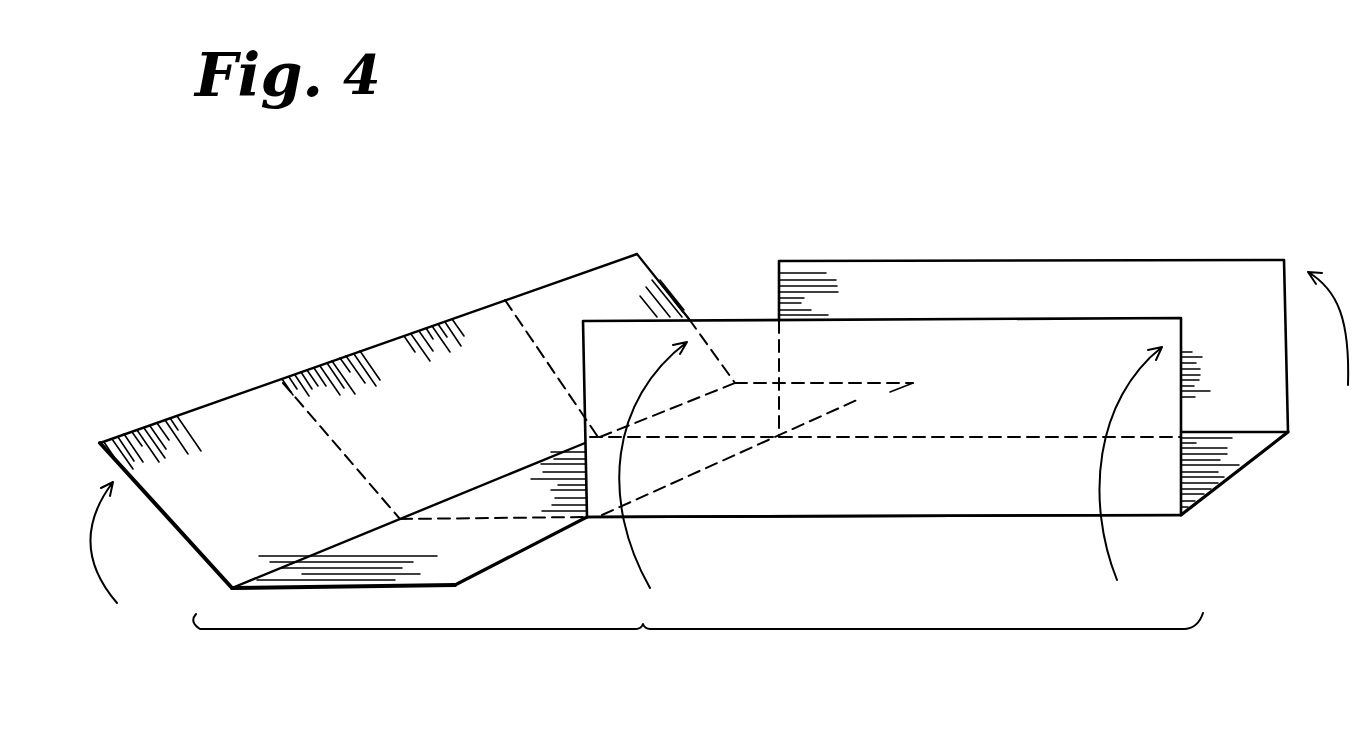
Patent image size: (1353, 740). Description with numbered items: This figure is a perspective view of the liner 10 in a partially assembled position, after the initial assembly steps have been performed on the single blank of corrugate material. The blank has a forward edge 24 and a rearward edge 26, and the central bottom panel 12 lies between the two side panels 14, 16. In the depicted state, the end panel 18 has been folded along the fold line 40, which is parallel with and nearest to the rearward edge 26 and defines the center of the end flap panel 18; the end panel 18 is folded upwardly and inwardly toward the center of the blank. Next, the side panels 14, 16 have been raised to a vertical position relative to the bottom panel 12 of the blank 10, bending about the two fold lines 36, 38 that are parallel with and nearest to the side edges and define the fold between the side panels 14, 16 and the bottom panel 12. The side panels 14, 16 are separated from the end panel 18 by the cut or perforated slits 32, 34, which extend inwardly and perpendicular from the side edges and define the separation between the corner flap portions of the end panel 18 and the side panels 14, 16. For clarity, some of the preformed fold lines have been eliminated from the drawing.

The liner 10 is at (698, 637).
The bottom panel 12 is at (1233, 453).
The side panel 14 is at (907, 507).
The side panel 16 is at (1250, 282).
The end flap panel 18 is at (392, 352).
The forward edge 24 is at (1218, 488).
The rearward edge 26 is at (213, 403).
The cut slit 32 is at (559, 534).
The cut slit 34 is at (858, 404).
The fold line 36 is at (1035, 517).
The fold line 38 is at (1073, 435).
The fold line 40 is at (483, 485).